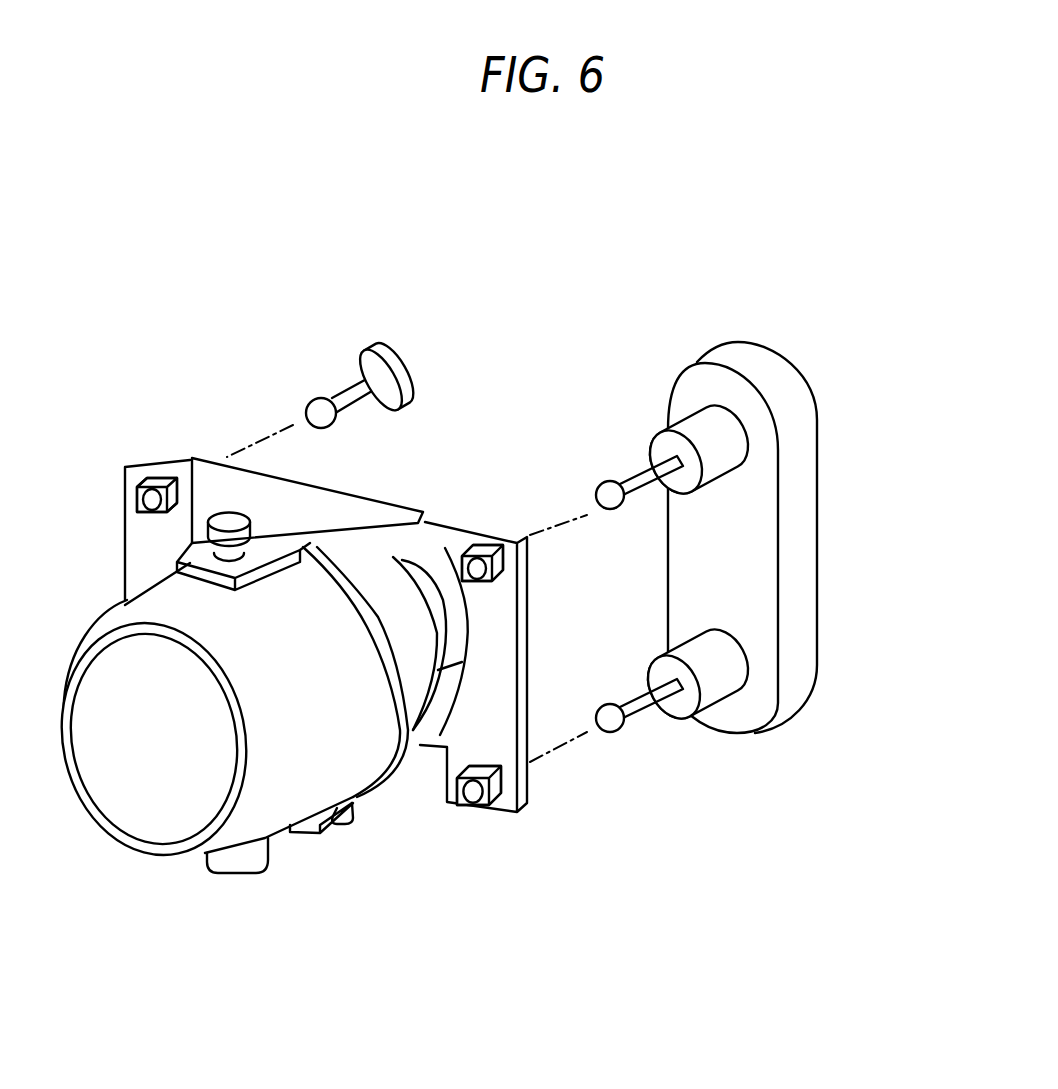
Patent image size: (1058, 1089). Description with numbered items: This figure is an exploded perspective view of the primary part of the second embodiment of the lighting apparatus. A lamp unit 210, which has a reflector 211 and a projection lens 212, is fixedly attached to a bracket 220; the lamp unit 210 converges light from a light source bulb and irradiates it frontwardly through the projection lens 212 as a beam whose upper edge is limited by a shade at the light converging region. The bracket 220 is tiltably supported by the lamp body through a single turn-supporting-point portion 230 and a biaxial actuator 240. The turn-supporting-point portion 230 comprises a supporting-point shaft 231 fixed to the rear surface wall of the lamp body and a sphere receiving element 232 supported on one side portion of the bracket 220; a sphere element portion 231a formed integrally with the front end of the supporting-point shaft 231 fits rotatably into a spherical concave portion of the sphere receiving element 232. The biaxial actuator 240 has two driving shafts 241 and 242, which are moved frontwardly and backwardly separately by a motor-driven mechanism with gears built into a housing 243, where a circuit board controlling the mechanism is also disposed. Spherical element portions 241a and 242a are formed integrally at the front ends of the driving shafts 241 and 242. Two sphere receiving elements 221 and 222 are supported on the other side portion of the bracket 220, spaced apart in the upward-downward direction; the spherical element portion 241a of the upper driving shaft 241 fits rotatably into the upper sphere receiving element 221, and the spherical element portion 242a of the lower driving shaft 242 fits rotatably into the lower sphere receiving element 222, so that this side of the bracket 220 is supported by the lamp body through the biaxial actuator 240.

The lamp unit 210 is at (288, 795).
The reflector 211 is at (383, 587).
The projection lens 212 is at (162, 802).
The bracket 220 is at (502, 693).
The sphere receiving element 221 is at (502, 562).
The sphere receiving element 222 is at (483, 806).
The turn-supporting-point portion 230 is at (197, 414).
The supporting-point shaft 231 is at (348, 388).
The sphere element portion 231a is at (315, 408).
The sphere receiving element 232 is at (147, 480).
The biaxial actuator 240 is at (906, 417).
The driving shaft 241 is at (634, 480).
The spherical element portion 241a is at (616, 507).
The driving shaft 242 is at (652, 716).
The spherical element portion 242a is at (610, 735).
The housing 243 is at (788, 412).